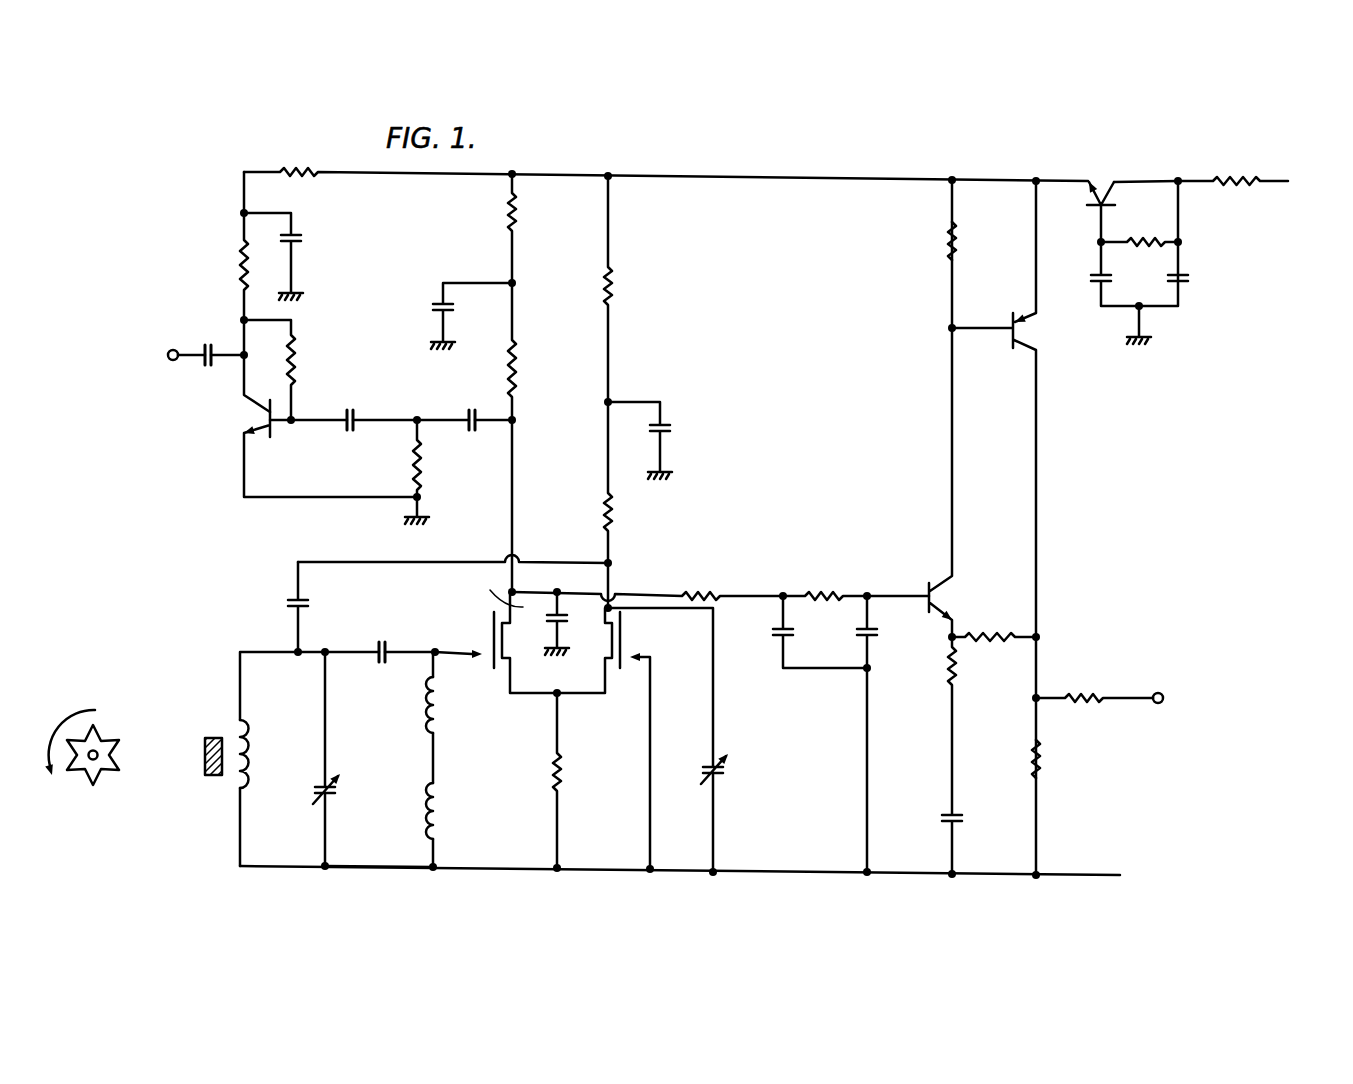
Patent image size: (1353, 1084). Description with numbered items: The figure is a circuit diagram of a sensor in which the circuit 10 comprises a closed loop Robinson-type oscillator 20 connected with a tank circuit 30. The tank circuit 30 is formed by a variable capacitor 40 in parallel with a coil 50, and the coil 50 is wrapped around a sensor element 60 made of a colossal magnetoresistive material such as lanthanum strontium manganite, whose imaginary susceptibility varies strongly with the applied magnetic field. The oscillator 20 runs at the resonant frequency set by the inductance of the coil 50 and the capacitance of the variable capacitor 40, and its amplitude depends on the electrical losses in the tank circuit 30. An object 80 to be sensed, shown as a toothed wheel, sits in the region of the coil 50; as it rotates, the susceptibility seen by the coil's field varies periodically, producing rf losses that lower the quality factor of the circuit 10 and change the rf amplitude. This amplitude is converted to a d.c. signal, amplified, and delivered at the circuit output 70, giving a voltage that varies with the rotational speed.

The circuit 10 is at (178, 192).
The closed loop Robinson-type oscillator 20 is at (663, 878).
The tank circuit 30 is at (417, 876).
The variable capacitor 40 is at (322, 782).
The coil 50 is at (246, 782).
The sensor element 60 is at (204, 765).
The circuit output 70 is at (1156, 692).
The object to be sensed 80 is at (108, 737).